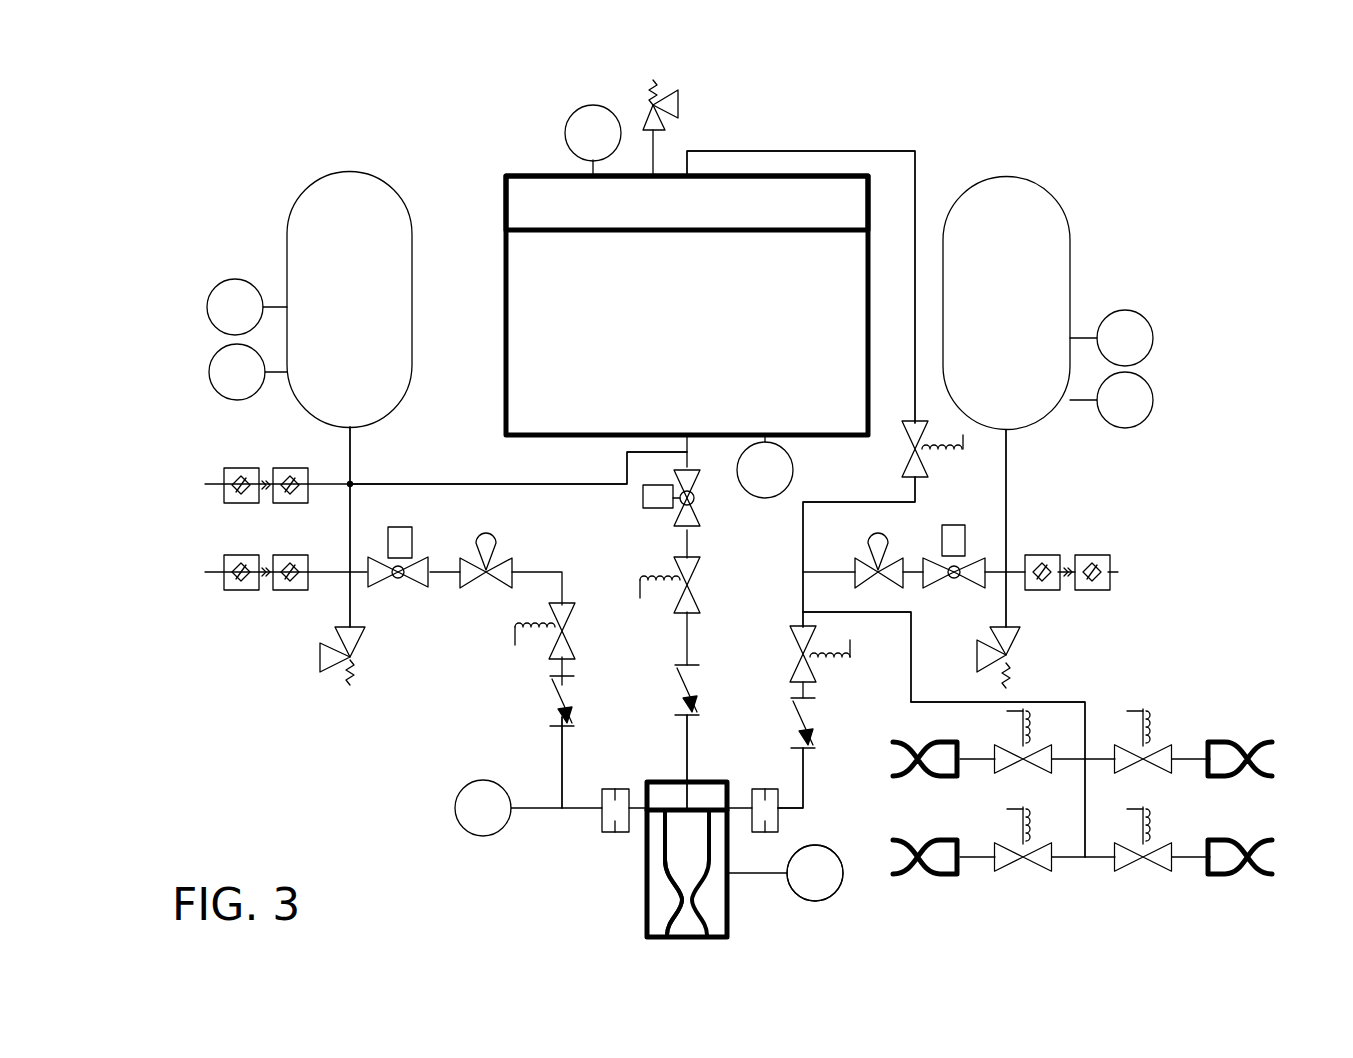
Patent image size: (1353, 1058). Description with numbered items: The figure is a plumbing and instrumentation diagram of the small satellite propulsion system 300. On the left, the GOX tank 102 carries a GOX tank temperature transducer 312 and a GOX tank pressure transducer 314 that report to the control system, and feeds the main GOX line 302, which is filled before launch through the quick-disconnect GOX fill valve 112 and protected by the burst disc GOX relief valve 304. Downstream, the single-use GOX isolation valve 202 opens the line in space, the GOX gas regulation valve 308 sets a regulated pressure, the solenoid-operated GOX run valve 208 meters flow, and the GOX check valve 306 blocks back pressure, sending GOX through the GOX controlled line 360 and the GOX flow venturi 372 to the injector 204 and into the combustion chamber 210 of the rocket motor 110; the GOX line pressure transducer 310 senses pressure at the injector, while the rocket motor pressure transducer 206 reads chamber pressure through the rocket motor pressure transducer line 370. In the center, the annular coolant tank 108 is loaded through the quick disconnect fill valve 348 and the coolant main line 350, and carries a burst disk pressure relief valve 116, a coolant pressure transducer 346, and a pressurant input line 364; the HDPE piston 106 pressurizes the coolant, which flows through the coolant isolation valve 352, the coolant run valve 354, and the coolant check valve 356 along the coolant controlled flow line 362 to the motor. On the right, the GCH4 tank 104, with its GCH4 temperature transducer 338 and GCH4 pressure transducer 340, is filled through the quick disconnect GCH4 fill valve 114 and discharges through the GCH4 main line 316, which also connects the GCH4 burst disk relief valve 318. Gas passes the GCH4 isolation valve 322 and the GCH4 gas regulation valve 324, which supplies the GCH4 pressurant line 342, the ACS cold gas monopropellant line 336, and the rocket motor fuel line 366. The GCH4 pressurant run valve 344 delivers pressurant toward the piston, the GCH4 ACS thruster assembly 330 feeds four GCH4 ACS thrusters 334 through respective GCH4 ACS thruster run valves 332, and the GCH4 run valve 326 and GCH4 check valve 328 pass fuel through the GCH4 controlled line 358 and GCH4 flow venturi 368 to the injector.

The small satellite propulsion system 300 is at (188, 68).
The GOX tank 102 is at (310, 187).
The GCH4 tank 104 is at (1020, 177).
The HDPE piston 106 is at (547, 222).
The annular coolant tank 108 is at (538, 272).
The coolant pressure transducer 346 is at (593, 106).
The burst disk pressure relief valve 116 is at (675, 95).
The pressurant input line 364 is at (790, 151).
The GOX tank temperature transducer 312 is at (234, 280).
The GOX tank pressure transducer 314 is at (212, 362).
The GCH4 temperature transducer 338 is at (1133, 311).
The GCH4 pressure transducer 340 is at (1150, 385).
The quick disconnect fill valve 348 is at (215, 454).
The coolant main line 350 is at (490, 484).
The main GOX line 302 is at (350, 535).
The quick-disconnect GOX fill valve 112 is at (247, 625).
The GOX isolation valve 202 is at (398, 540).
The GOX gas regulation valve 308 is at (500, 565).
The GOX relief valve 304 is at (340, 663).
The GOX run valve 208 is at (548, 650).
The GOX check valve 306 is at (555, 700).
The GOX controlled line 360 is at (562, 768).
The GOX line pressure transducer 310 is at (455, 820).
The GOX flow venturi 372 is at (610, 832).
The GCH4 flow venturi 368 is at (780, 824).
The coolant isolation valve 352 is at (680, 520).
The coolant run valve 354 is at (680, 605).
The coolant check valve 356 is at (682, 672).
The coolant controlled flow line 362 is at (687, 732).
The GCH4 pressurant line 342 is at (803, 532).
The GCH4 pressurant run valve 344 is at (915, 475).
The GCH4 main line 316 is at (1006, 485).
The quick disconnect GCH4 fill valve 114 is at (1068, 533).
The GCH4 gas regulation valve 324 is at (878, 585).
The GCH4 isolation valve 322 is at (930, 580).
The GCH4 burst disk relief valve 318 is at (1010, 655).
The rocket motor fuel line 366 is at (803, 612).
The GCH4 run valve 326 is at (810, 675).
The GCH4 check valve 328 is at (812, 720).
The GCH4 controlled line 358 is at (803, 778).
The GCH4 ACS cold gas monopropellant line 336 is at (965, 702).
The GCH4 ACS thruster assembly 330 is at (1122, 675).
The GCH4 ACS thruster run valve 332 is at (1118, 866).
The GCH4 ACS thruster 334 is at (1230, 880).
The injector 204 is at (690, 790).
The rocket motor 110 is at (665, 857).
The combustion chamber 210 is at (650, 905).
The rocket motor pressure transducer line 370 is at (745, 880).
The rocket motor pressure transducer 206 is at (830, 893).